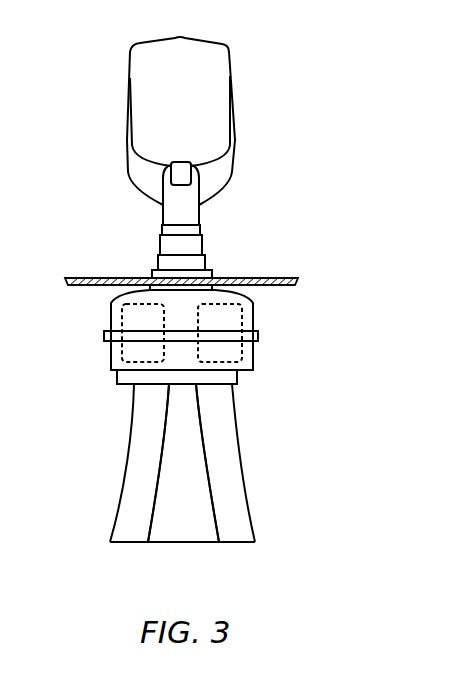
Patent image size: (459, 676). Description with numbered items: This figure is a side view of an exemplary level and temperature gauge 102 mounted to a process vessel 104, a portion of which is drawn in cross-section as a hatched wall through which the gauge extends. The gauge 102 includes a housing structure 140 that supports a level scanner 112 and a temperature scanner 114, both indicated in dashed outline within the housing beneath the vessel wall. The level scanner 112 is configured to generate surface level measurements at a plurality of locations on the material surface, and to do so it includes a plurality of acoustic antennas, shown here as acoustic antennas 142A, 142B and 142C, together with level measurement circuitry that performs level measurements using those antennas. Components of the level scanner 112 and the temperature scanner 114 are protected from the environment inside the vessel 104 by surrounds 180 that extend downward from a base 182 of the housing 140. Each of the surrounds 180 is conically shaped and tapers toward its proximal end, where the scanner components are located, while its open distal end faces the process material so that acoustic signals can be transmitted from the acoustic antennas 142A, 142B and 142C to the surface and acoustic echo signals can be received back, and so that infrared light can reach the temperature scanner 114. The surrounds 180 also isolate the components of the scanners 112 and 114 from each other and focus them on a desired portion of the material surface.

The level and temperature gauge 102 is at (137, 88).
The process vessel 104 is at (275, 278).
The level scanner 112 is at (236, 320).
The temperature scanner 114 is at (131, 319).
The housing structure 140 is at (112, 363).
The base 182 is at (252, 364).
The surrounds 180 is at (178, 490).
The acoustic antenna 142A is at (125, 508).
The acoustic antenna 142B is at (175, 528).
The acoustic antenna 142C is at (243, 508).